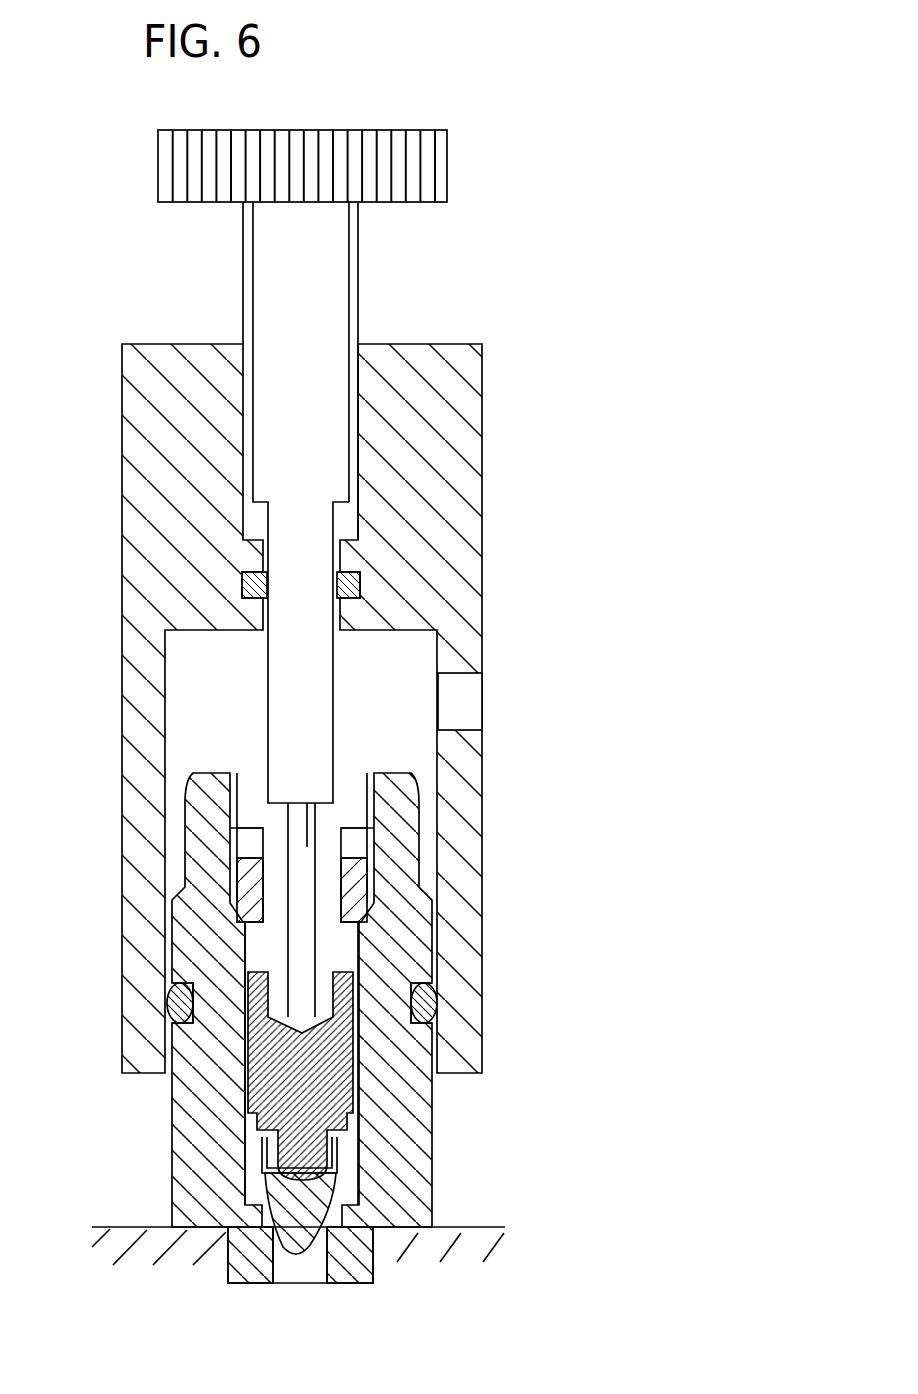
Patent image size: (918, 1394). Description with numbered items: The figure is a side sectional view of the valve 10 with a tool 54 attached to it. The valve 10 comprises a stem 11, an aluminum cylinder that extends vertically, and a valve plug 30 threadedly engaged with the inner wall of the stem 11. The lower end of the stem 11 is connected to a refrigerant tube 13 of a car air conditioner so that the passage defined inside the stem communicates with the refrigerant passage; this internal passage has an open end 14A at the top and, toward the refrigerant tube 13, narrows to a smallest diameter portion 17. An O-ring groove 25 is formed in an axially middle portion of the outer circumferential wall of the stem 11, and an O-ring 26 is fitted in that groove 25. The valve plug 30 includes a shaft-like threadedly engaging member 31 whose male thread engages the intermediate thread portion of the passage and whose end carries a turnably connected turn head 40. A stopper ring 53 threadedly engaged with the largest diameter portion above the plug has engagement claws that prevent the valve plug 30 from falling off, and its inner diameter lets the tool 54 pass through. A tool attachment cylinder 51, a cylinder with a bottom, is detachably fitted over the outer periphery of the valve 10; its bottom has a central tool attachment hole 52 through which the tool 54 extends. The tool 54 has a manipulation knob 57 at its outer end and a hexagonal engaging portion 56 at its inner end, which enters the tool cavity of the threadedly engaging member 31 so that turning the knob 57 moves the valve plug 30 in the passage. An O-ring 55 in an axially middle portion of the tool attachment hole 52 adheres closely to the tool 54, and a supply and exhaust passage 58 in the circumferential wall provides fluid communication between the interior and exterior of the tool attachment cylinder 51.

The manipulation knob 57 is at (437, 172).
The tool 54 is at (360, 262).
The tool attachment hole 52 is at (346, 389).
The tool attachment cylinder 51 is at (353, 708).
The supply and exhaust passage 58 is at (468, 702).
The O-ring 55 is at (352, 585).
The engaging portion 56 is at (322, 890).
The valve 10 is at (312, 967).
The stem 11 is at (207, 783).
The open end 14A is at (245, 787).
The stopper ring 53 is at (352, 830).
The O-ring groove 25 is at (167, 1025).
The O-ring 26 is at (175, 1000).
The valve plug 30 is at (343, 970).
The threadedly engaging member 31 is at (360, 1090).
The turn head 40 is at (345, 1175).
The refrigerant tube 13 is at (487, 1240).
The smallest diameter portion 17 is at (277, 1260).